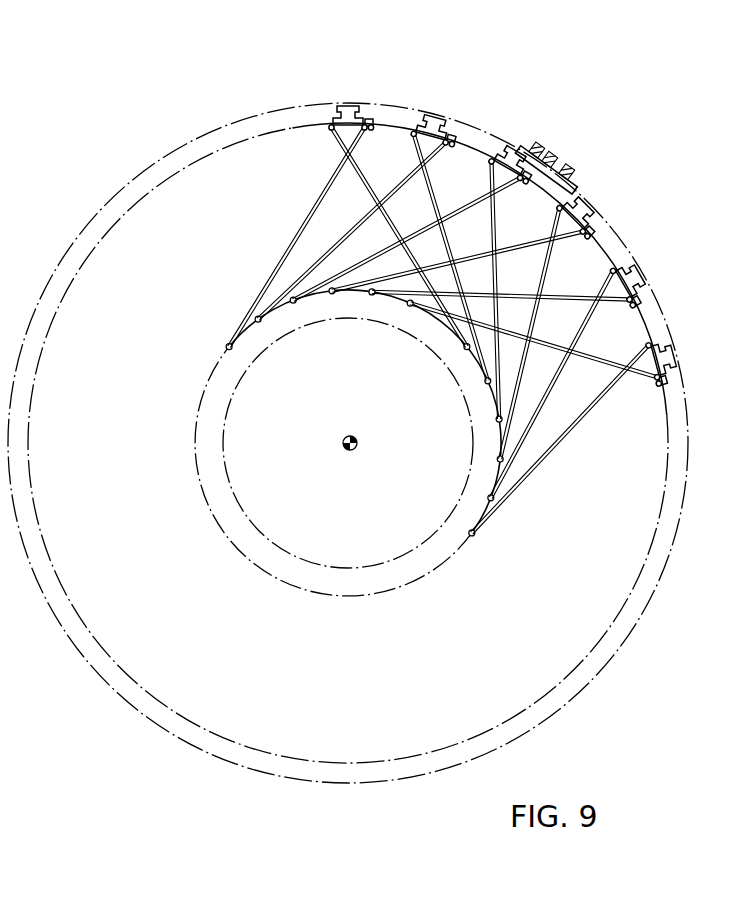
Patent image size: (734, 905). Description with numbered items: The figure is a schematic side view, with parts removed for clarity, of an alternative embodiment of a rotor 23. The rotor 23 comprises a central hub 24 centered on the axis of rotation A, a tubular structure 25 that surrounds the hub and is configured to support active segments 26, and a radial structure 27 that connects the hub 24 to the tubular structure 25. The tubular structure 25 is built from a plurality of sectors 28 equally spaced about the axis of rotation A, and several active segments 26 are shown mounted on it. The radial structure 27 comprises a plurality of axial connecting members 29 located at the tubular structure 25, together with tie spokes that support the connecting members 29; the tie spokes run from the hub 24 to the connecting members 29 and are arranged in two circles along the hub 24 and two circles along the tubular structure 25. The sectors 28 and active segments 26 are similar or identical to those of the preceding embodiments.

The rotor 23 is at (603, 126).
The hub 24 is at (360, 310).
The tubular structure 25 is at (287, 99).
The active segments 26 is at (543, 151).
The radial structure 27 is at (292, 216).
The sectors 28 is at (400, 103).
The axial connecting members 29 is at (350, 106).
The axis of rotation A is at (356, 450).